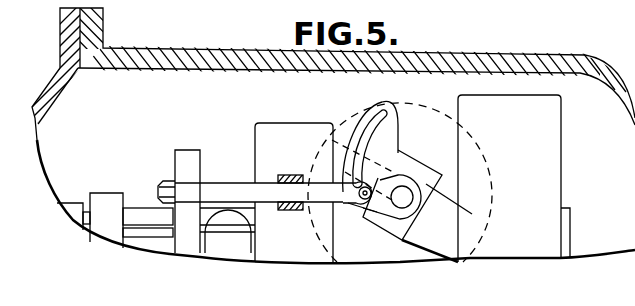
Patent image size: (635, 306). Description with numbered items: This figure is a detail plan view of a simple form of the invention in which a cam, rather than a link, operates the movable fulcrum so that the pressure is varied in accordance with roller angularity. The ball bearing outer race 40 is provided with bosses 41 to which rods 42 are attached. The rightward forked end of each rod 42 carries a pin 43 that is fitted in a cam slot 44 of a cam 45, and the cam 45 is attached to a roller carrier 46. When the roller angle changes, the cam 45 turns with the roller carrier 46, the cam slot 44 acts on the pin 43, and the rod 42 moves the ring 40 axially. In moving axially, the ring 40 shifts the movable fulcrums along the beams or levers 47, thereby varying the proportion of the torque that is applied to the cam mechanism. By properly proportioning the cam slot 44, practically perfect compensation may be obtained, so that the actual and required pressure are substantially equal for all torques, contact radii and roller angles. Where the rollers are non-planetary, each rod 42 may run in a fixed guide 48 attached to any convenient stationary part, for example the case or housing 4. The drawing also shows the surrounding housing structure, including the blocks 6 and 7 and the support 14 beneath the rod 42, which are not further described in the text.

The case or housing 4 is at (242, 62).
The housing block 6 is at (277, 132).
The housing block 7 is at (465, 107).
The support arch 14 is at (220, 245).
The ball bearing outer race 40 is at (187, 158).
The boss 41 is at (185, 185).
The rod 42 is at (228, 192).
The pin 43 is at (358, 205).
The cam slot 44 is at (363, 130).
The cam 45 is at (388, 133).
The roller carrier 46 is at (423, 168).
The beam or lever 47 is at (142, 215).
The fixed guide 48 is at (290, 175).